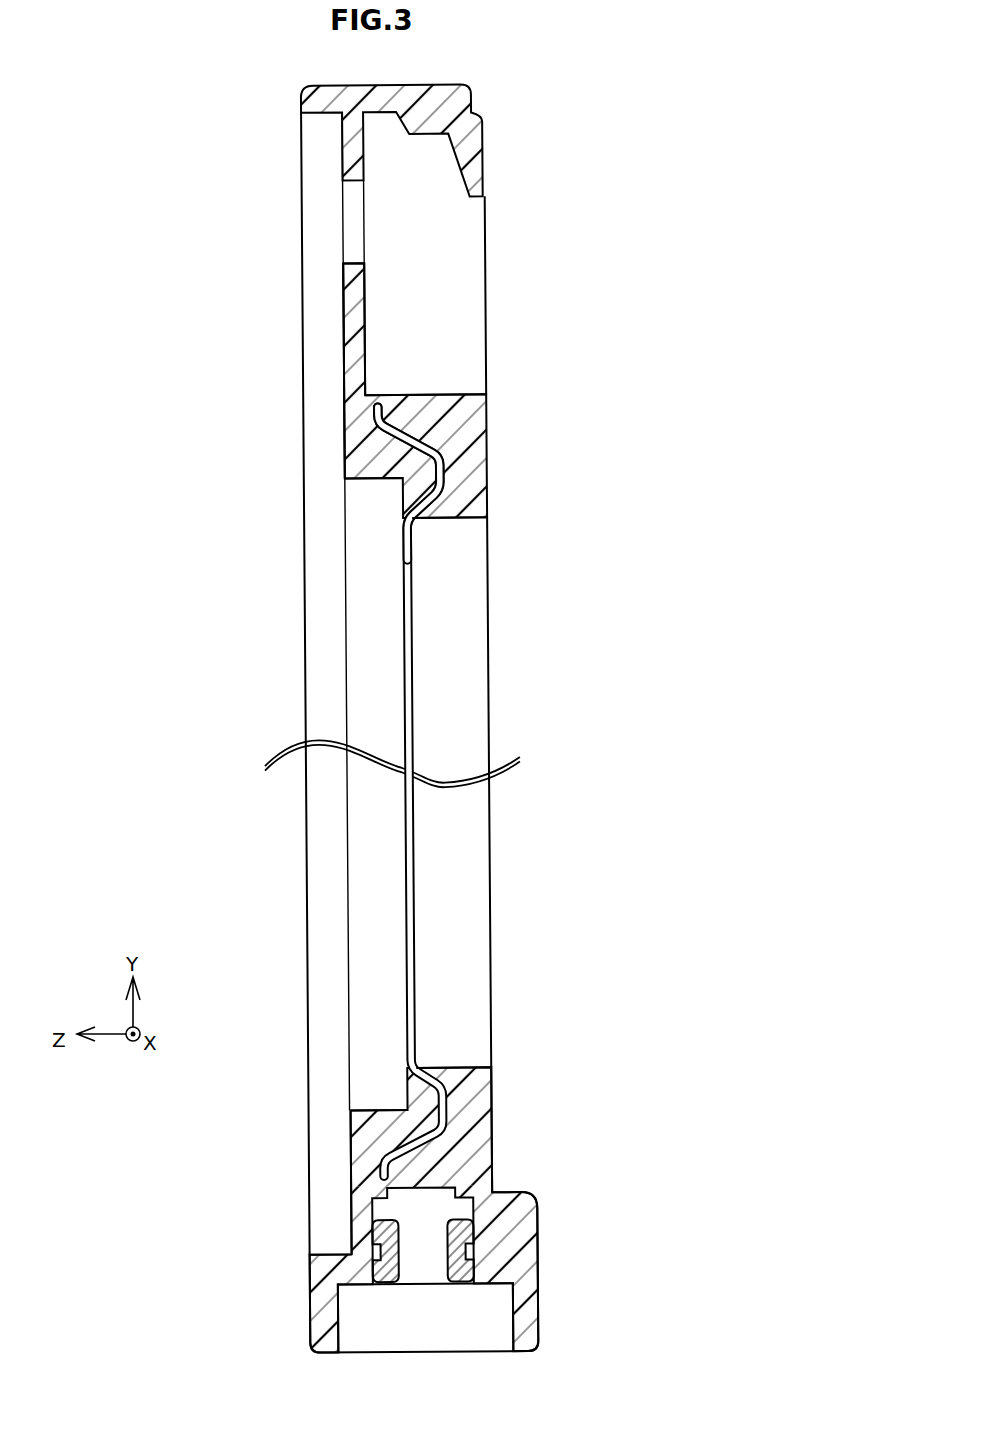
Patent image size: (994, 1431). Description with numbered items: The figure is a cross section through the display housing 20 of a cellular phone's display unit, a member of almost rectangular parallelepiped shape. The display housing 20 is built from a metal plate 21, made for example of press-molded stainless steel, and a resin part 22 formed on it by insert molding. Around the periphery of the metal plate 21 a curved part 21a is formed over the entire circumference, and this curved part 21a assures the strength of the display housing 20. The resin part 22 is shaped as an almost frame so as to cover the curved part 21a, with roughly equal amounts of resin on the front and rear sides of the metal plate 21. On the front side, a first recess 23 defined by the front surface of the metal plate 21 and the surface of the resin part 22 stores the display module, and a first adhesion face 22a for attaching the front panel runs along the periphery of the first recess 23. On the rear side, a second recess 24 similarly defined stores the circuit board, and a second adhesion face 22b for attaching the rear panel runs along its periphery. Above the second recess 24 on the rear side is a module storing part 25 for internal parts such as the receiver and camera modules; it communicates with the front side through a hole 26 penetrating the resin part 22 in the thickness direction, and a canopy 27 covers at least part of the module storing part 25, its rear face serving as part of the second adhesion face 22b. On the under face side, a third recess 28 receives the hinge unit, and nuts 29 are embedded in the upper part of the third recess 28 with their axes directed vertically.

The display housing 20 is at (648, 196).
The metal plate 21 is at (390, 893).
The curved part 21a is at (422, 443).
The resin part 22 is at (506, 466).
The first adhesion face 22a is at (347, 1112).
The second adhesion face 22b is at (493, 1080).
The first recess 23 is at (368, 481).
The second recess 24 is at (474, 522).
The module storing part 25 is at (478, 391).
The hole 26 is at (348, 262).
The canopy 27 is at (486, 173).
The third recess 28 is at (516, 1327).
The nuts 29 is at (442, 1284).